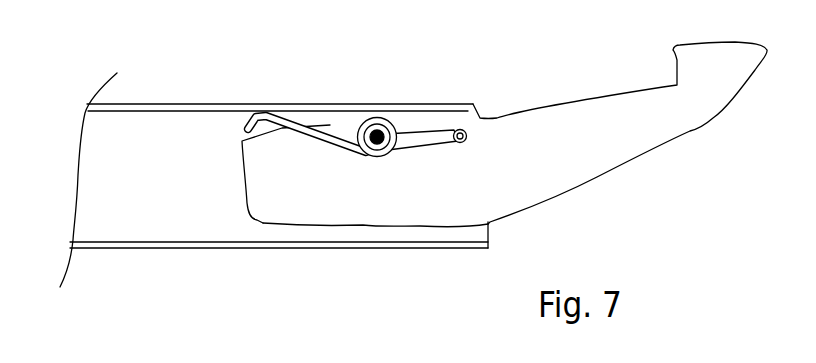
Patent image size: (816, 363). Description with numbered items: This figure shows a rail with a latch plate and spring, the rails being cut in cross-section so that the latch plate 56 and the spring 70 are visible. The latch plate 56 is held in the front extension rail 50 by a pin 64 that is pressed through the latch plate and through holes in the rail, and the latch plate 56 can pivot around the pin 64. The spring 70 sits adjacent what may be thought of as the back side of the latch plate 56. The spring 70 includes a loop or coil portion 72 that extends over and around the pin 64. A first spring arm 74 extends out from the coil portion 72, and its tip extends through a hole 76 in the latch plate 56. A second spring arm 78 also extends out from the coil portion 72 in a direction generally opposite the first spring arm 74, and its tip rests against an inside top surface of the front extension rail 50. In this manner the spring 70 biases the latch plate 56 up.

The front extension rail 50 is at (133, 205).
The latch plate 56 is at (635, 135).
The pin 64 is at (375, 133).
The spring 70 is at (344, 120).
The coil portion 72 is at (387, 128).
The first spring arm 74 is at (430, 145).
The hole 76 is at (467, 133).
The second spring arm 78 is at (327, 138).